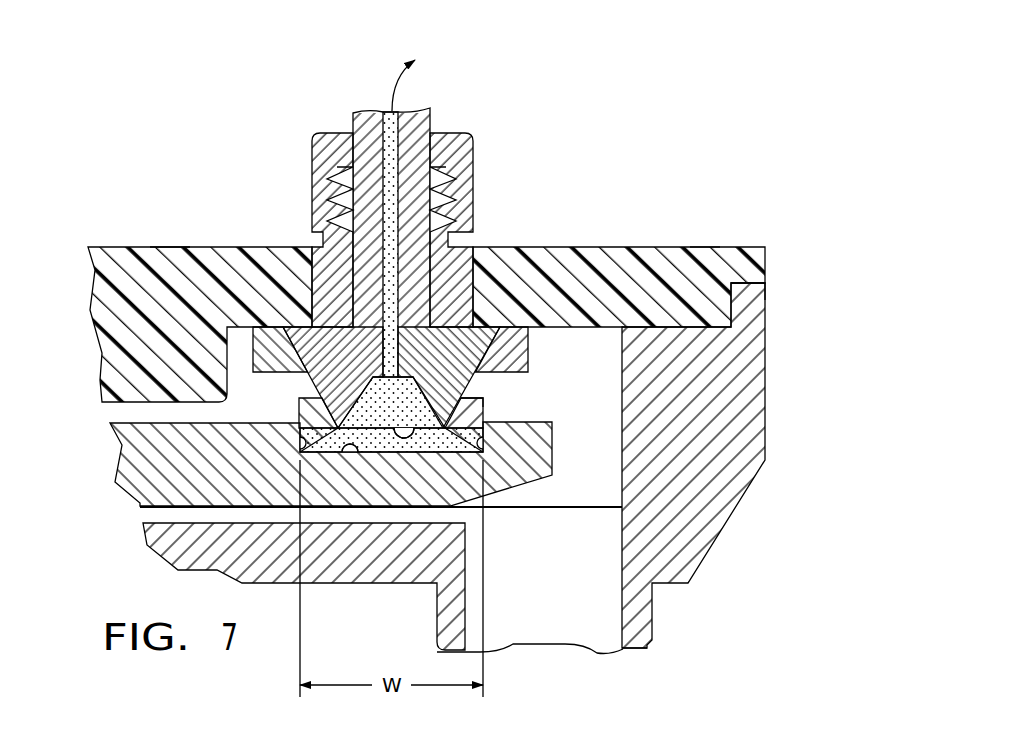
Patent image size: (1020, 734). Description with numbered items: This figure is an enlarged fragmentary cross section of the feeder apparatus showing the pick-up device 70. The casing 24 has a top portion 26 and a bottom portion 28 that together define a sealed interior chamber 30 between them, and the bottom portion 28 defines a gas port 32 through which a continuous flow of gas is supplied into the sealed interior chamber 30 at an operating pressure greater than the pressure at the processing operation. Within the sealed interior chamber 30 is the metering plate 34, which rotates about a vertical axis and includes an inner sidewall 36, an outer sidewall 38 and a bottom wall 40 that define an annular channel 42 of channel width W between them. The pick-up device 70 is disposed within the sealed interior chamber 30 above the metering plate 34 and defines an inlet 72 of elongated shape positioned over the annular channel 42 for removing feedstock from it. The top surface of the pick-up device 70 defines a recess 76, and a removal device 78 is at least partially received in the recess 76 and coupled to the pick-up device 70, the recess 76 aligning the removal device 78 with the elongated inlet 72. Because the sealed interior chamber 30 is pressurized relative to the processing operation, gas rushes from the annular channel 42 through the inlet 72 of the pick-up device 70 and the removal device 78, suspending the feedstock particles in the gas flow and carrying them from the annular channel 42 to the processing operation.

The casing 24 is at (765, 260).
The top portion 26 is at (697, 247).
The bottom portion 28 is at (765, 327).
The sealed interior chamber 30 is at (623, 467).
The gas port 32 is at (653, 622).
The metering plate 34 is at (158, 422).
The inner sidewall 36 is at (297, 437).
The outer sidewall 38 is at (483, 446).
The bottom wall 40 is at (415, 447).
The annular channel 42 is at (360, 447).
The pick-up device 70 is at (483, 407).
The inlet 72 is at (397, 437).
The recess 76 is at (168, 246).
The removal device 78 is at (473, 176).